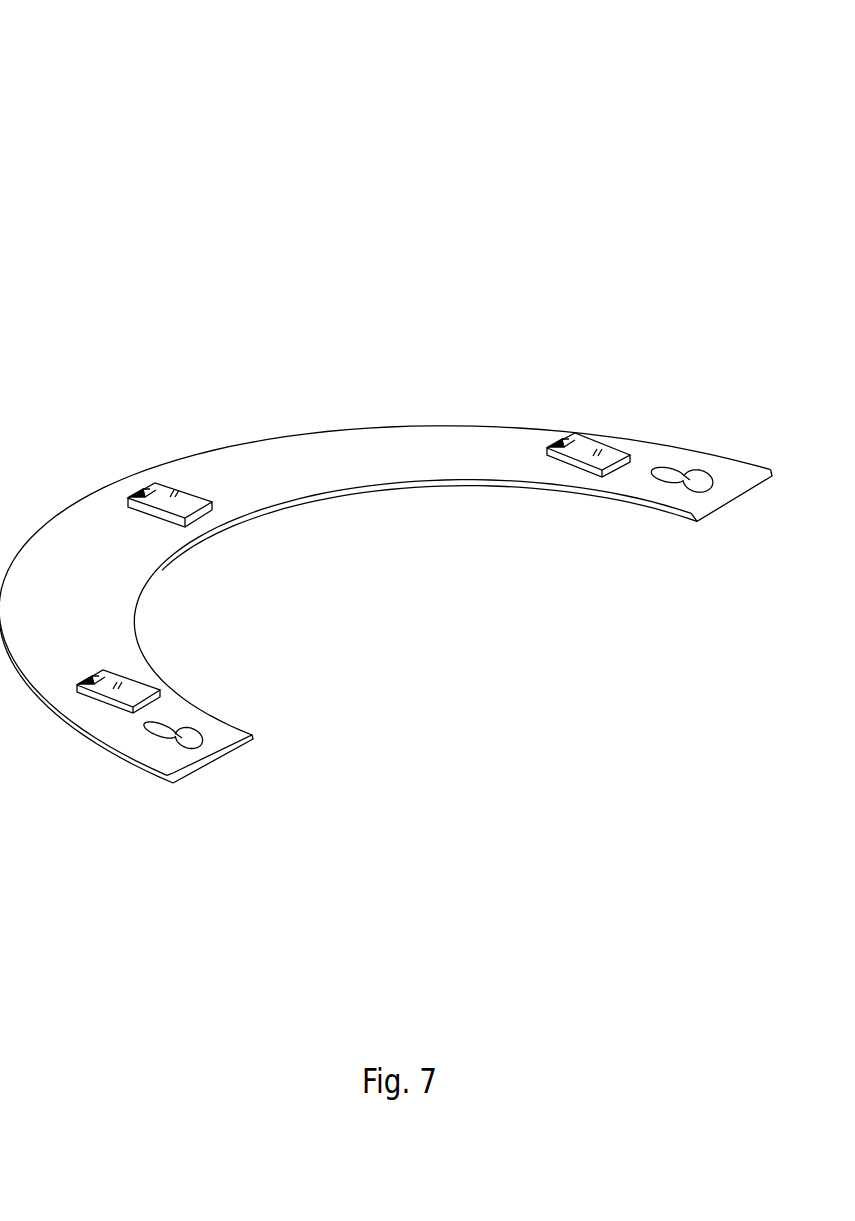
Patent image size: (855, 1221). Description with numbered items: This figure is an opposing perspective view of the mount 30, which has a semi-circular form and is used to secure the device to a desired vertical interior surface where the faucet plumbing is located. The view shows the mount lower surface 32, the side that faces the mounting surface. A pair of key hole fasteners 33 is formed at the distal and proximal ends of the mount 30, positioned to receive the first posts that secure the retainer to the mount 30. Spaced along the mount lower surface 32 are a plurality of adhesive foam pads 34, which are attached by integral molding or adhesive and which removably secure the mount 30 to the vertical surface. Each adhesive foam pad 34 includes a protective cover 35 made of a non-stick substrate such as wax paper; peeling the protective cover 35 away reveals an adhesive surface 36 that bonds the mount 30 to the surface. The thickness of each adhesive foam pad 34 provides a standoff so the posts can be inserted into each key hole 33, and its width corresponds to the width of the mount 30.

The mount 30 is at (108, 101).
The mount lower surface 32 is at (354, 434).
The key hole fastener 33 is at (675, 478).
The adhesive foam pad 34 is at (177, 521).
The protective cover 35 is at (190, 502).
The adhesive surface 36 is at (142, 497).